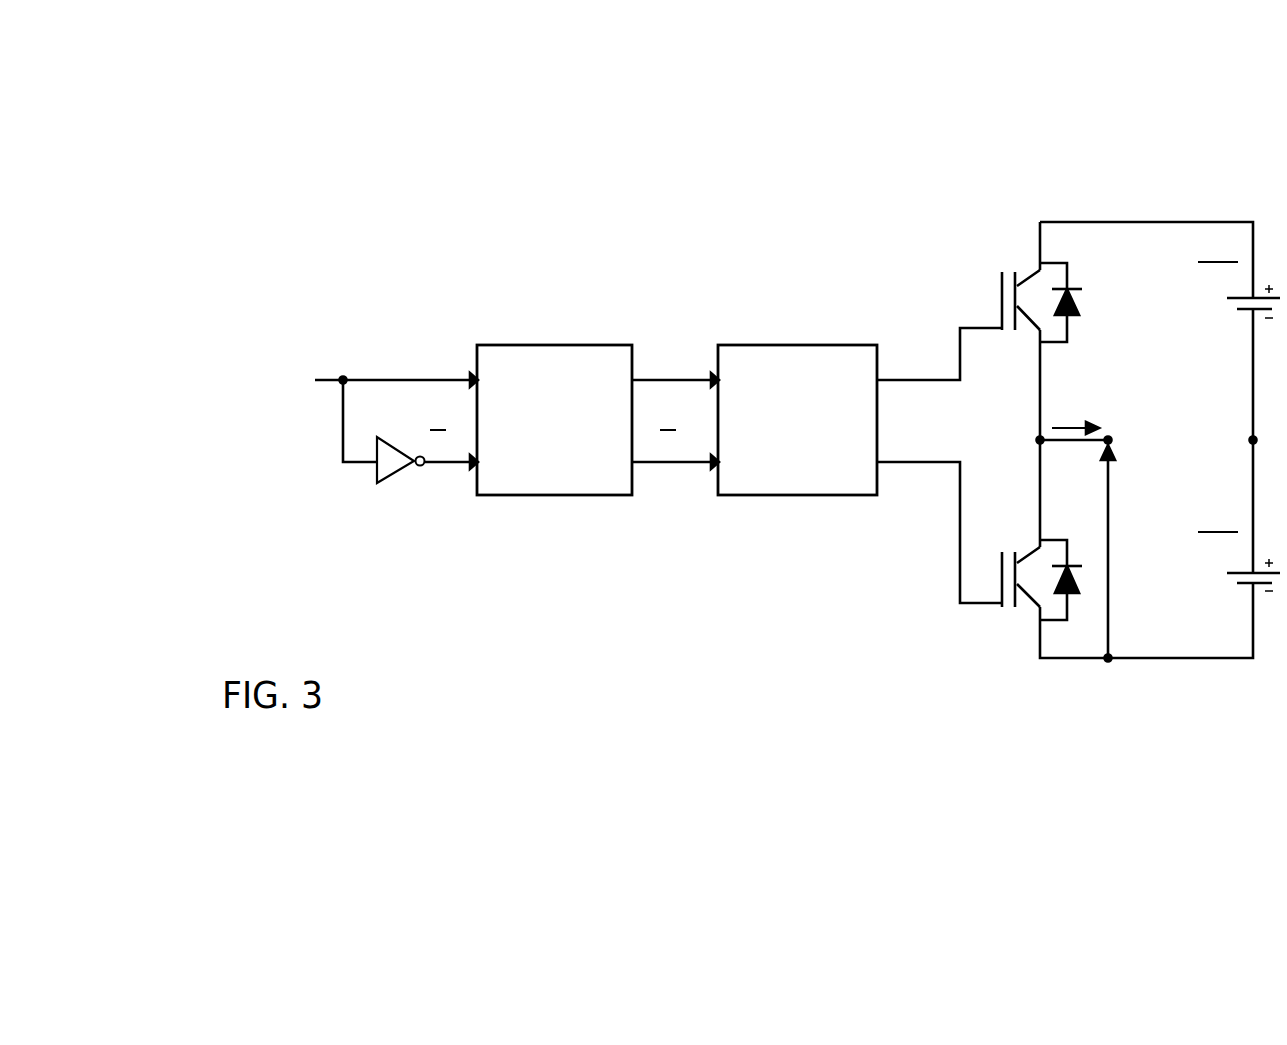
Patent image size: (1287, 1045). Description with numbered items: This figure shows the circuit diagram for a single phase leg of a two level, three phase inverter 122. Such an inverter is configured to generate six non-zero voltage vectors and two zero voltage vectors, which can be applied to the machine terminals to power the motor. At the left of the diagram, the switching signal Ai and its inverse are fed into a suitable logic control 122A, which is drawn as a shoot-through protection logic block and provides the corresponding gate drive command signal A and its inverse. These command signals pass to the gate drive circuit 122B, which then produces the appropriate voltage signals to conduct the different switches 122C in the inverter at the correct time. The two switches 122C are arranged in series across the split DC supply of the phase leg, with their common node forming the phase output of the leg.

The two level, three phase inverter 122 is at (342, 143).
The logic control 122A is at (587, 343).
The gate drive circuit 122B is at (810, 343).
The switches 122C is at (1023, 230).